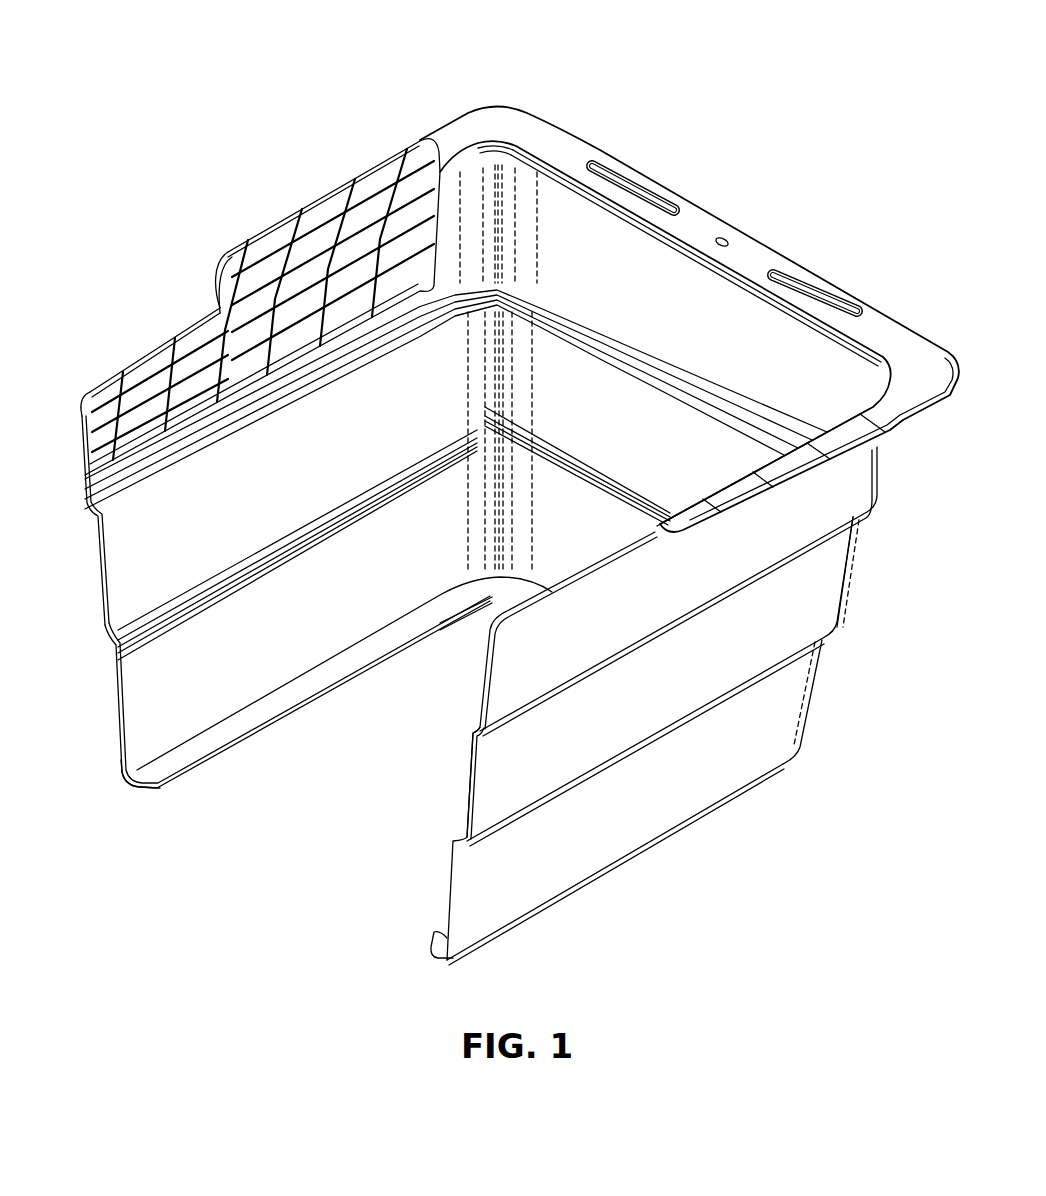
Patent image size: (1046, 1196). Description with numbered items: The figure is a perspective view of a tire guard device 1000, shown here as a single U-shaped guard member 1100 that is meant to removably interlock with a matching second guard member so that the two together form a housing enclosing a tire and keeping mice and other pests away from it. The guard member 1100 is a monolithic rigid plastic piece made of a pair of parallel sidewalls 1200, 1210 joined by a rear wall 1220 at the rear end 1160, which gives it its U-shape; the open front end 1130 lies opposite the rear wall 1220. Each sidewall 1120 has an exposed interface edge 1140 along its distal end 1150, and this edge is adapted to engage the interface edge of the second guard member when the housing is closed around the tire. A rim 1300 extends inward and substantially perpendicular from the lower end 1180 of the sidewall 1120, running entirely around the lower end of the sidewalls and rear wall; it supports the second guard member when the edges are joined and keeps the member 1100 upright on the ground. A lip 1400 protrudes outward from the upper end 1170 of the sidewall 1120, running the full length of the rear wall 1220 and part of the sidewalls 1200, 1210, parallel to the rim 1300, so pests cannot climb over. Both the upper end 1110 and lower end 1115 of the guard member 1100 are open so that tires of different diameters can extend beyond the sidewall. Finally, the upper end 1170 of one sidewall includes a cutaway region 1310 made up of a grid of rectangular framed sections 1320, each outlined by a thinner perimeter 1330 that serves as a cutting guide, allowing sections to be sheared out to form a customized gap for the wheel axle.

The tire guard device 1000 is at (686, 140).
The U-shaped guard member 1100 is at (140, 713).
The upper end of the guard member 1110 is at (302, 192).
The lower end of the guard member 1115 is at (600, 910).
The sidewall 1120 is at (847, 580).
The open front end 1130 is at (273, 890).
The exposed interface edge 1140 is at (480, 757).
The distal end of the sidewall 1150 is at (133, 592).
The rear end of the guard member 1160 is at (870, 292).
The upper end of the sidewall 1170 is at (460, 110).
The lower end of the sidewall 1180 is at (443, 947).
The sidewall 1200 is at (167, 343).
The sidewall 1210 is at (677, 803).
The rear wall 1220 is at (743, 302).
The rim 1300 is at (153, 790).
The cutaway region 1310 is at (100, 383).
The framed section 1320 is at (97, 417).
The perimeter 1330 is at (218, 292).
The lip 1400 is at (955, 357).